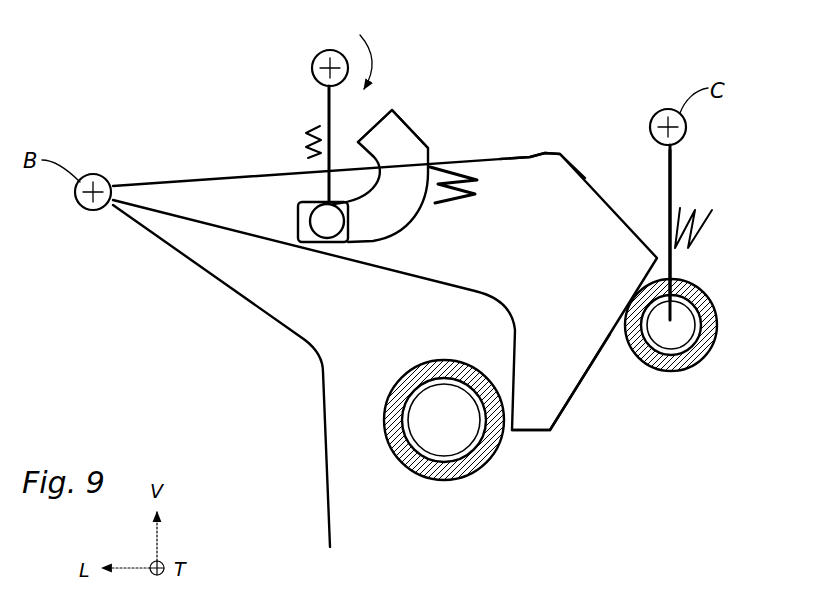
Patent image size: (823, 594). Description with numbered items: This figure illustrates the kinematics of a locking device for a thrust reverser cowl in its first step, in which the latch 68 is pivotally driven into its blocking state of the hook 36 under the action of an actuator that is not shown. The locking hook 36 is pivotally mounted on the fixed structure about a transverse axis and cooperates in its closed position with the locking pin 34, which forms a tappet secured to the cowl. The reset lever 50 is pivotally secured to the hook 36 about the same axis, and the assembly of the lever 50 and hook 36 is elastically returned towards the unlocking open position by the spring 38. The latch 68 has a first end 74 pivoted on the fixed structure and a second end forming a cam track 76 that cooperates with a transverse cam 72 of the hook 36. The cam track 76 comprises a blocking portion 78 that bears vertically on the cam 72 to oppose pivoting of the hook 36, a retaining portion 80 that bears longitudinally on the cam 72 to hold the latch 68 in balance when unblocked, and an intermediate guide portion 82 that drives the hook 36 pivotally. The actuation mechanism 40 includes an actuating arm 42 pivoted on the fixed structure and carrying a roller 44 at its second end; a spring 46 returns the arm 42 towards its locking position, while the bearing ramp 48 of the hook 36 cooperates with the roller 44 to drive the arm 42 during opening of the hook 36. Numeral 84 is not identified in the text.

The locking pin 34 is at (474, 492).
The locking hook 36 is at (517, 124).
The spring 38 is at (471, 197).
The actuation mechanism 40 is at (722, 140).
The actuating arm 42 is at (687, 170).
The roller 44 is at (716, 368).
The spring 46 is at (702, 227).
The bearing ramp 48 is at (583, 386).
The reset lever 50 is at (279, 346).
The latch 68 is at (314, 100).
The transverse cam 72 is at (325, 221).
The first end 74 is at (317, 55).
The cam track 76 is at (431, 137).
The blocking portion 78 is at (308, 203).
The retaining portion 80 is at (398, 124).
The guide portion 82 is at (400, 226).
The spring 84 is at (302, 142).